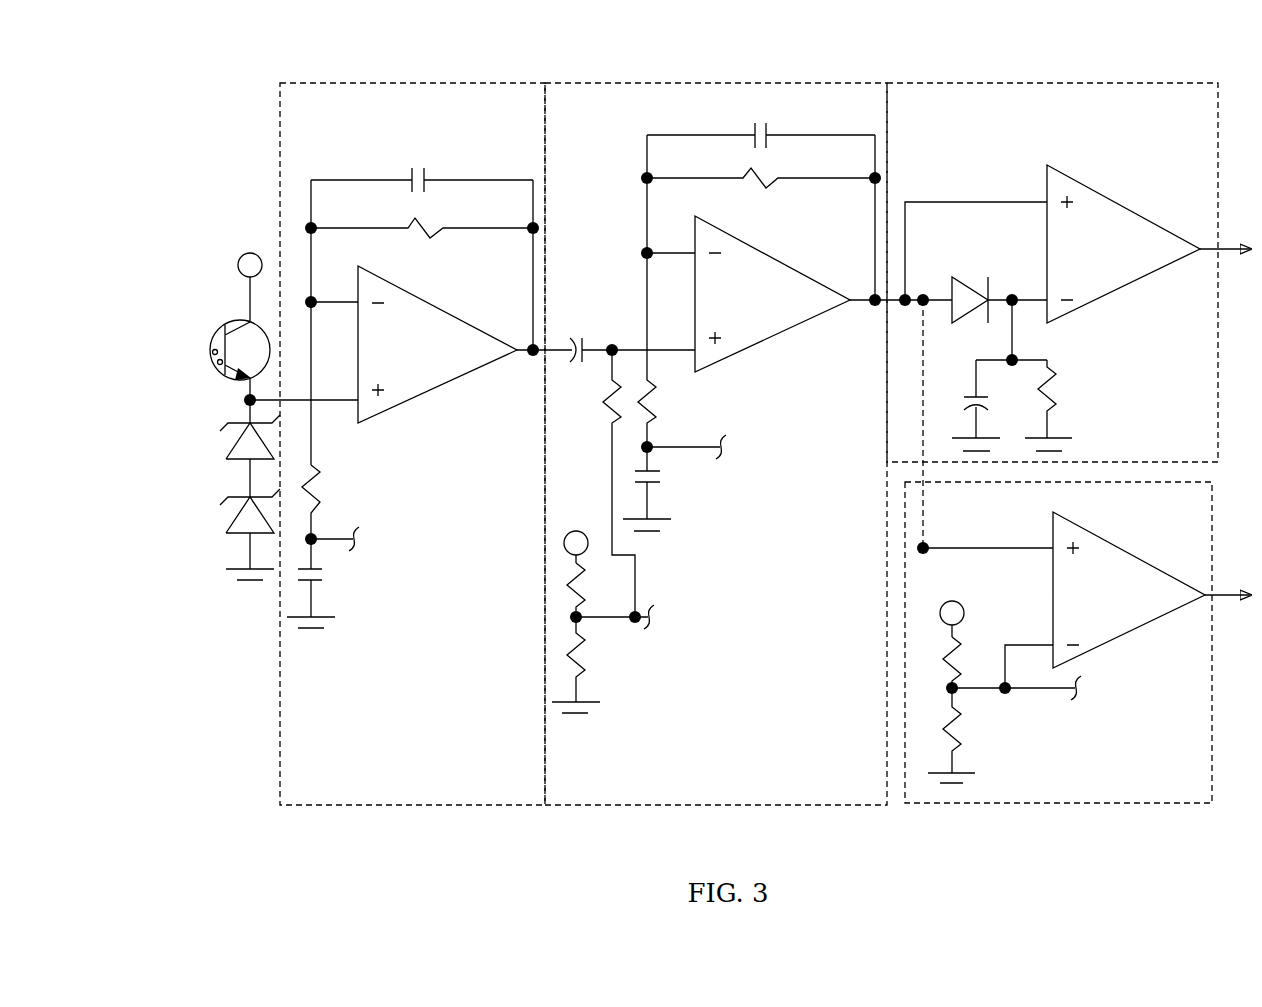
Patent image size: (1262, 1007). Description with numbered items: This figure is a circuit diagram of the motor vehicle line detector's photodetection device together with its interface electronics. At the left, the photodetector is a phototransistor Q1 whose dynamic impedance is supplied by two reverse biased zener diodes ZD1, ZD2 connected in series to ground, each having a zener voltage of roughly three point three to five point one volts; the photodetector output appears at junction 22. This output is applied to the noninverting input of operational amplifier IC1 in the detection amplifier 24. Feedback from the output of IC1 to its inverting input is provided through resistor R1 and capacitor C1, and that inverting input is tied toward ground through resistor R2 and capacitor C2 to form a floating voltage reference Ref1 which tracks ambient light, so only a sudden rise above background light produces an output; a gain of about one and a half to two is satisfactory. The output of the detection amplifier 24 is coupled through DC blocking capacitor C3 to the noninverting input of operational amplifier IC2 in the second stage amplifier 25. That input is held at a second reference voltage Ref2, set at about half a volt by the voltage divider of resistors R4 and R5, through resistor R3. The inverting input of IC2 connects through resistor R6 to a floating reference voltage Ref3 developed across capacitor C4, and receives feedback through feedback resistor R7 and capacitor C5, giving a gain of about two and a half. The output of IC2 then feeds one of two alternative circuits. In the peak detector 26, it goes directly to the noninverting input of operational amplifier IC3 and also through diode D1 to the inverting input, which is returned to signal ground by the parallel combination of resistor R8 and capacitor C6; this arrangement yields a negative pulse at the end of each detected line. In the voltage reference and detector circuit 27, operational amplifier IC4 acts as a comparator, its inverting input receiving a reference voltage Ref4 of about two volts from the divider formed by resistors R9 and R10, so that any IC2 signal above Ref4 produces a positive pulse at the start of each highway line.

The junction 22 is at (240, 399).
The detection amplifier 24 is at (401, 100).
The second stage amplifier 25 is at (695, 99).
The peak detector 26 is at (1028, 99).
The voltage reference and detector circuit 27 is at (1046, 790).
The phototransistor Q1 is at (208, 352).
The zener diode ZD1 is at (230, 448).
The zener diode ZD2 is at (230, 534).
The operational amplifier IC1 is at (437, 344).
The operational amplifier IC2 is at (772, 294).
The operational amplifier IC3 is at (1148, 244).
The operational amplifier IC4 is at (1151, 590).
The resistor R1 is at (422, 240).
The resistor R2 is at (329, 501).
The resistor R3 is at (600, 483).
The resistor R4 is at (593, 590).
The resistor R5 is at (585, 665).
The resistor R6 is at (669, 291).
The feedback resistor R7 is at (761, 189).
The resistor R8 is at (1057, 405).
The resistor R9 is at (965, 662).
The resistor R10 is at (963, 735).
The capacitor C1 is at (422, 168).
The capacitor C2 is at (319, 583).
The DC blocking capacitor C3 is at (630, 333).
The capacitor C4 is at (657, 489).
The capacitor C5 is at (761, 124).
The capacitor C6 is at (964, 405).
The diode D1 is at (999, 285).
The floating voltage reference level Ref1 is at (360, 539).
The second reference voltage Ref2 is at (635, 617).
The floating reference voltage Ref3 is at (708, 447).
The reference voltage Ref4 is at (1038, 688).